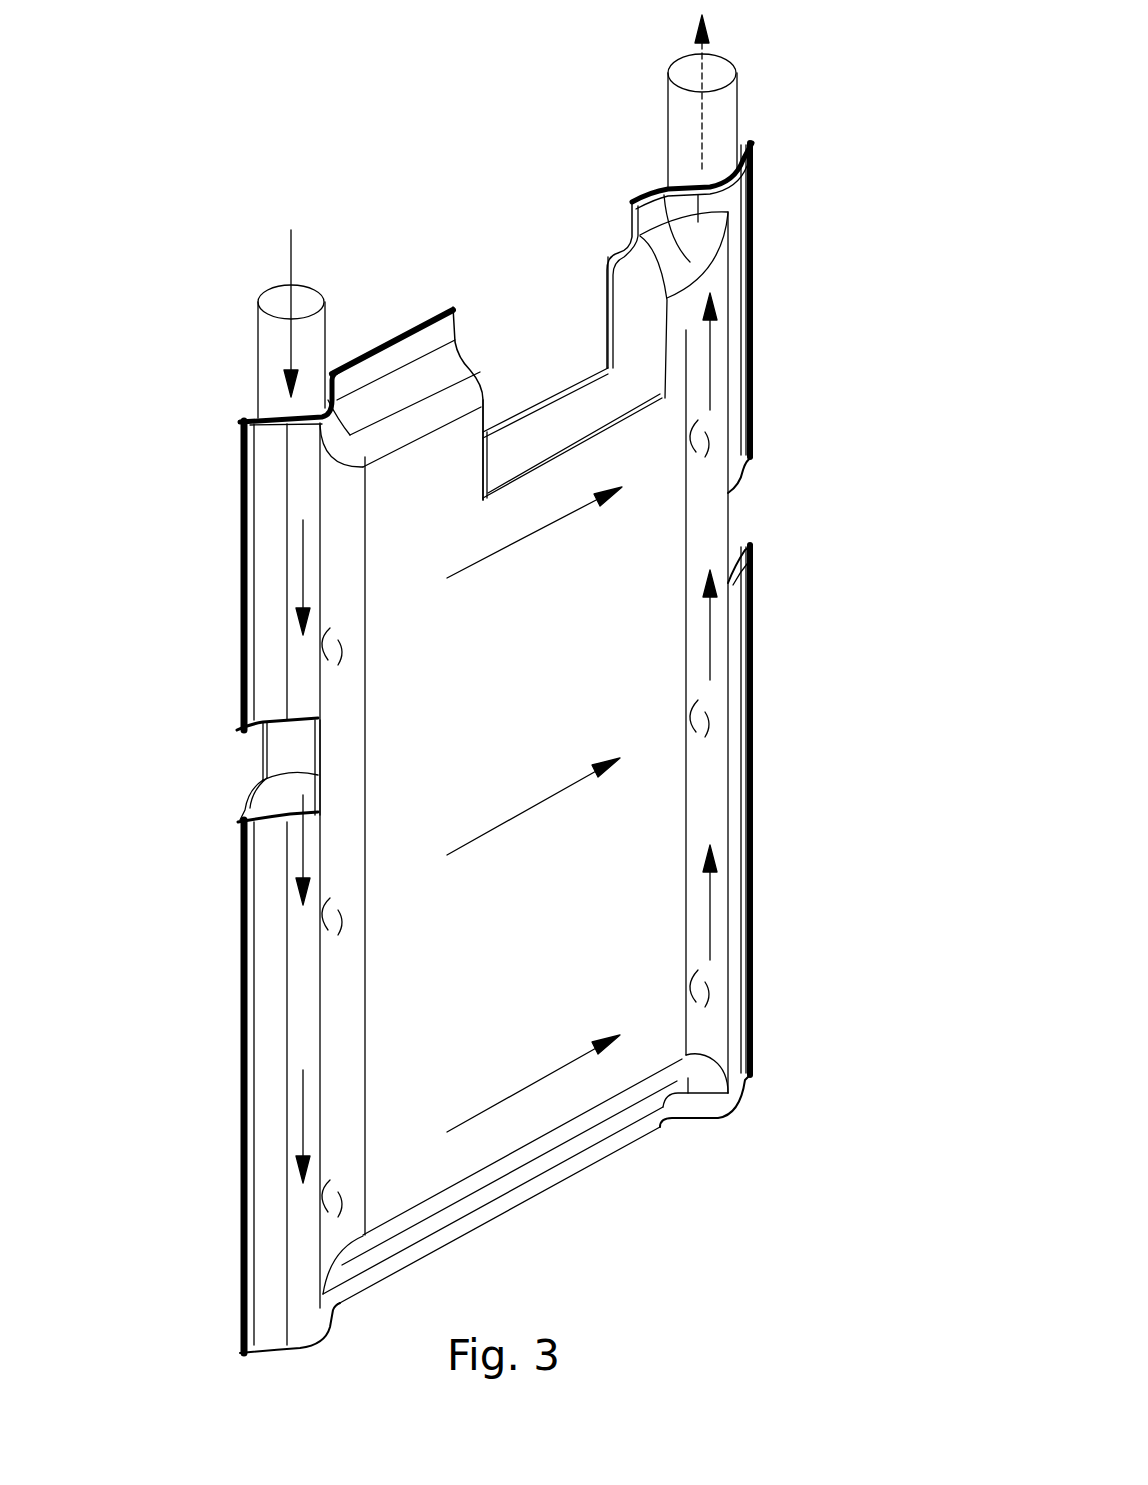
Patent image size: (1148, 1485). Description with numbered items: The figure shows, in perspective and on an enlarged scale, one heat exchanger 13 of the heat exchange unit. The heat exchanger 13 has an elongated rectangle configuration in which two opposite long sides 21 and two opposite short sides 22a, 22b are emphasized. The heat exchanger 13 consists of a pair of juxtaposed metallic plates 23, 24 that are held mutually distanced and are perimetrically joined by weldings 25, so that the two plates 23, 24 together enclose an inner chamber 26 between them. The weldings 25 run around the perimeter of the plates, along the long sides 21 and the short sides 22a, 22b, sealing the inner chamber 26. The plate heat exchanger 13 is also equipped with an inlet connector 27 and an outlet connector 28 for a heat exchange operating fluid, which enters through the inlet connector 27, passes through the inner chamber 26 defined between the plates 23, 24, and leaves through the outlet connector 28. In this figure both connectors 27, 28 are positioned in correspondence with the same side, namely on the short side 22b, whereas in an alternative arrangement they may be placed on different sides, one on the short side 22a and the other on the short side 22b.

The heat exchanger 13 is at (818, 391).
The long side 21 is at (219, 1030).
The short side 22a is at (553, 1198).
The short side 22b is at (440, 303).
The metallic plate 23 is at (613, 417).
The metallic plate 24 is at (523, 412).
The welding 25 is at (372, 355).
The inner chamber 26 is at (557, 421).
The inlet connector 27 is at (258, 349).
The outlet connector 28 is at (740, 105).